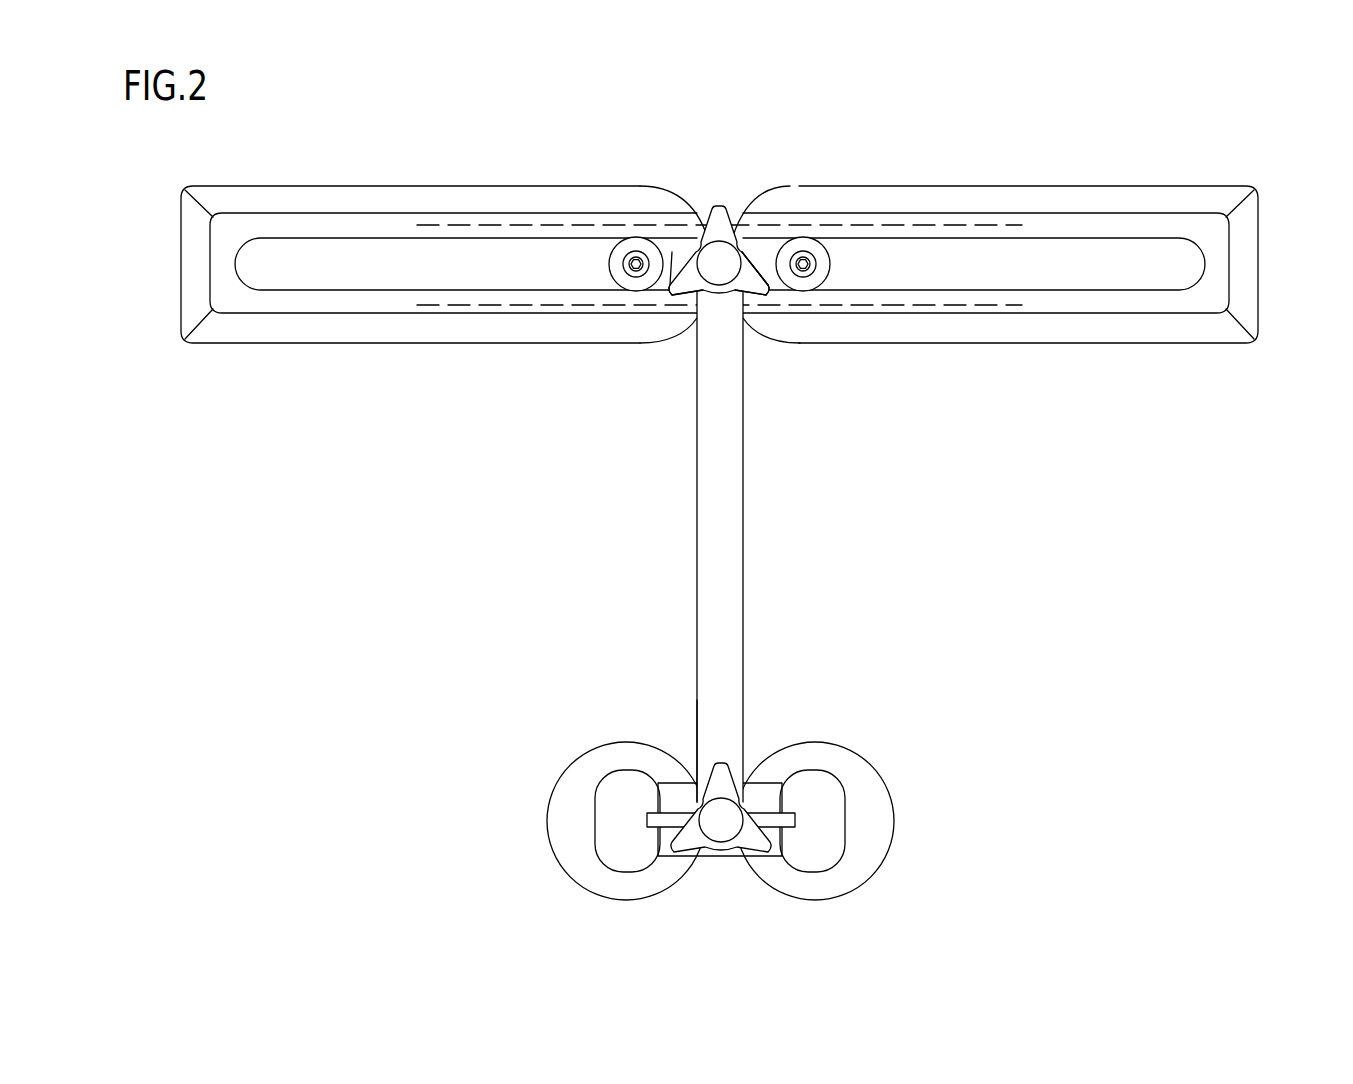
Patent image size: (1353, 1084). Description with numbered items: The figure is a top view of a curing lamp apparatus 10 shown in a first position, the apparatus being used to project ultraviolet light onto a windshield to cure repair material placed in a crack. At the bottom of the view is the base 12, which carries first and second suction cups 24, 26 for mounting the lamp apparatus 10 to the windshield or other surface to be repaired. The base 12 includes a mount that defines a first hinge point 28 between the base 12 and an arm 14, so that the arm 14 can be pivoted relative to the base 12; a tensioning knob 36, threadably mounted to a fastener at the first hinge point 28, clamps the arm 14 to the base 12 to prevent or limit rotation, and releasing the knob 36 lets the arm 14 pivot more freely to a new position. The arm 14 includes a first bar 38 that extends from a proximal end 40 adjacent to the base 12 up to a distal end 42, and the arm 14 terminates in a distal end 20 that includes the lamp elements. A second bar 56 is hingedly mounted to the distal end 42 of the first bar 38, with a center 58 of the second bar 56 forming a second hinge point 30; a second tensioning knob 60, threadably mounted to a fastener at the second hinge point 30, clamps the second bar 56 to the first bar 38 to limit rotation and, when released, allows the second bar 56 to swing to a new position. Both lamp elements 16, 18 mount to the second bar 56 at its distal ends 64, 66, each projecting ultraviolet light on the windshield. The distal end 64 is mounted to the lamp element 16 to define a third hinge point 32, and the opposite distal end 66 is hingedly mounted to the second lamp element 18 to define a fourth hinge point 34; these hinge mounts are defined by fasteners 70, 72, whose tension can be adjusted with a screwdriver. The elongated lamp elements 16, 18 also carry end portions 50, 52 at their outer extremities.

The lamp apparatus 10 is at (457, 155).
The base 12 is at (830, 772).
The arm 14 is at (728, 542).
The lamp element 16 is at (420, 267).
The lamp element 18 is at (1024, 266).
The distal end 20 is at (728, 270).
The suction cup 24 is at (596, 896).
The suction cup 26 is at (847, 893).
The first hinge point 28 is at (722, 852).
The second hinge point 30 is at (705, 284).
The third hinge point 32 is at (618, 264).
The fourth hinge point 34 is at (820, 265).
The tensioning knob 36 is at (771, 848).
The first bar 38 is at (744, 468).
The proximal end 40 is at (697, 793).
The distal end 42 is at (744, 298).
The left end cap 50 is at (181, 272).
The right end cap 52 is at (1259, 267).
The second bar 56 is at (753, 237).
The center 58 is at (697, 237).
The tensioning knob 60 is at (753, 272).
The distal end 64 is at (608, 264).
The distal end 66 is at (832, 265).
The fastener 70 is at (637, 276).
The fastener 72 is at (804, 276).